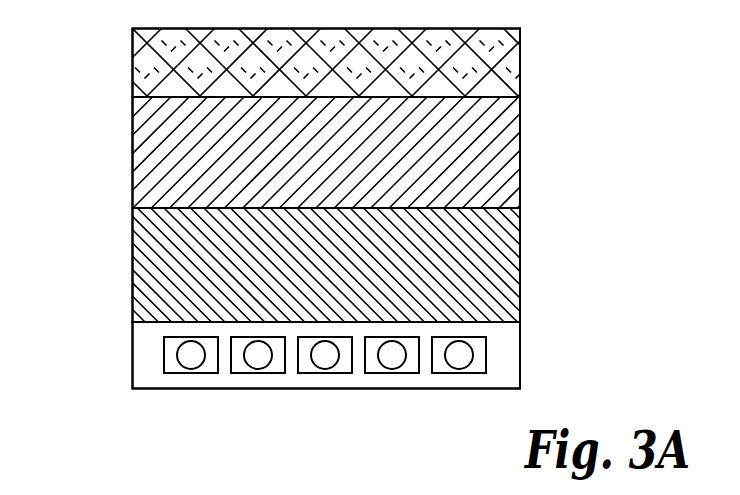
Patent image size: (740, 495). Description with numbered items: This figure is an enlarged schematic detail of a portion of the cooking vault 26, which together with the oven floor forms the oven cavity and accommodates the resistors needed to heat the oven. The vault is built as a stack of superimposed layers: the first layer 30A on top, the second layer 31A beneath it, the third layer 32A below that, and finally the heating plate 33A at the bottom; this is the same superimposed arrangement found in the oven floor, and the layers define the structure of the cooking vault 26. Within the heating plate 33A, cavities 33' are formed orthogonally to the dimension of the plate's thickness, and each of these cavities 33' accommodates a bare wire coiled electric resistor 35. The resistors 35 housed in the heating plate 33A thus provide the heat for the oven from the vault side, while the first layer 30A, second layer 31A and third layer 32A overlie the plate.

The cooking vault 26 is at (580, 126).
The first layer 30A is at (140, 58).
The second layer 31A is at (143, 140).
The third layer 32A is at (140, 256).
The heating plate 33A is at (133, 355).
The cavities 33' is at (224, 401).
The bare wire coiled electric resistors 35 is at (460, 359).